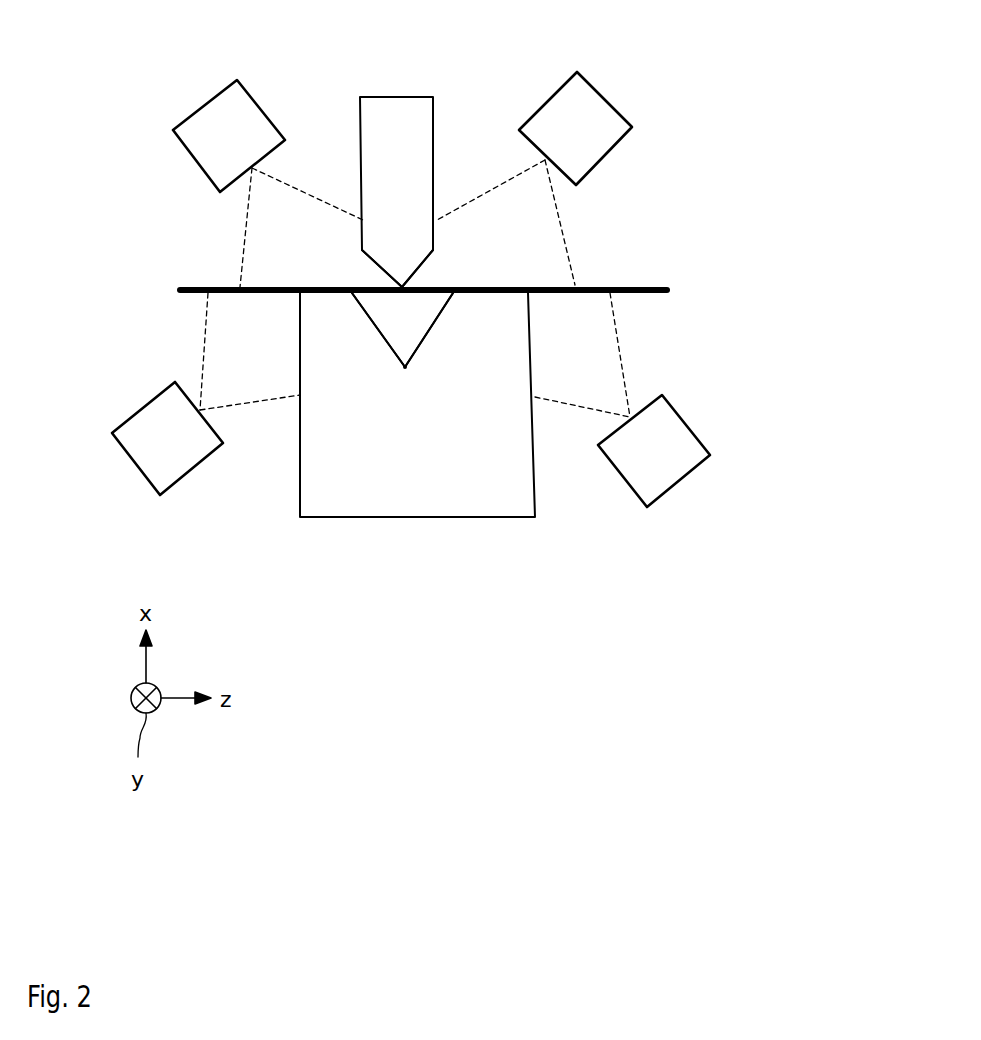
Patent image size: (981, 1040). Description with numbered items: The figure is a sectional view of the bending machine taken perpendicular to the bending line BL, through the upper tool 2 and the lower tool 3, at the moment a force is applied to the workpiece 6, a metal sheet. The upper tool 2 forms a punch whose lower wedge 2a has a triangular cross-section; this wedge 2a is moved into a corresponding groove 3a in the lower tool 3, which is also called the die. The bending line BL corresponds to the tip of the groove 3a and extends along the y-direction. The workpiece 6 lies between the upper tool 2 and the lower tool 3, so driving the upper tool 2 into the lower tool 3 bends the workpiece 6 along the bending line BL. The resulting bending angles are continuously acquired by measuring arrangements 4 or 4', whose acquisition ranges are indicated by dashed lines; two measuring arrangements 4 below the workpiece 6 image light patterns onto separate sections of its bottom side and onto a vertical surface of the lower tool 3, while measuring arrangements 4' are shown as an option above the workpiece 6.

The upper tool 2 is at (377, 117).
The lower wedge 2a is at (410, 257).
The lower tool 3 is at (465, 493).
The groove 3a is at (385, 323).
The measuring arrangement 4 is at (400, 432).
The measuring arrangement 4' is at (404, 162).
The workpiece 6 is at (637, 286).
The bending line BL is at (405, 368).